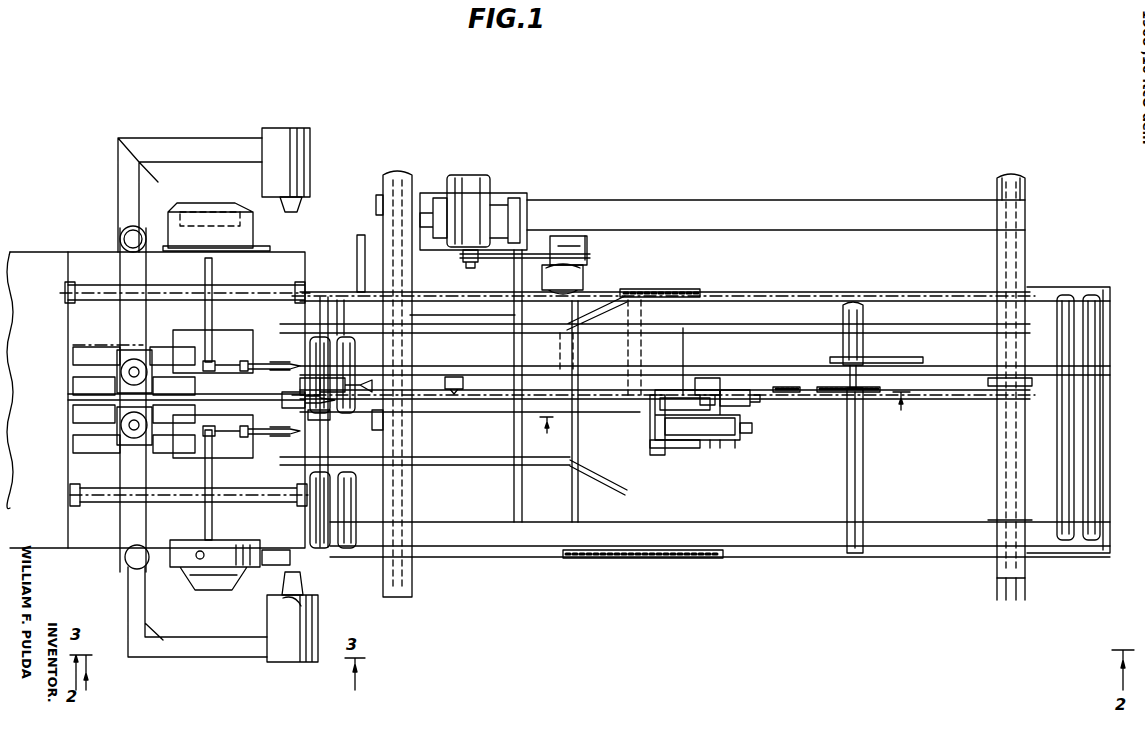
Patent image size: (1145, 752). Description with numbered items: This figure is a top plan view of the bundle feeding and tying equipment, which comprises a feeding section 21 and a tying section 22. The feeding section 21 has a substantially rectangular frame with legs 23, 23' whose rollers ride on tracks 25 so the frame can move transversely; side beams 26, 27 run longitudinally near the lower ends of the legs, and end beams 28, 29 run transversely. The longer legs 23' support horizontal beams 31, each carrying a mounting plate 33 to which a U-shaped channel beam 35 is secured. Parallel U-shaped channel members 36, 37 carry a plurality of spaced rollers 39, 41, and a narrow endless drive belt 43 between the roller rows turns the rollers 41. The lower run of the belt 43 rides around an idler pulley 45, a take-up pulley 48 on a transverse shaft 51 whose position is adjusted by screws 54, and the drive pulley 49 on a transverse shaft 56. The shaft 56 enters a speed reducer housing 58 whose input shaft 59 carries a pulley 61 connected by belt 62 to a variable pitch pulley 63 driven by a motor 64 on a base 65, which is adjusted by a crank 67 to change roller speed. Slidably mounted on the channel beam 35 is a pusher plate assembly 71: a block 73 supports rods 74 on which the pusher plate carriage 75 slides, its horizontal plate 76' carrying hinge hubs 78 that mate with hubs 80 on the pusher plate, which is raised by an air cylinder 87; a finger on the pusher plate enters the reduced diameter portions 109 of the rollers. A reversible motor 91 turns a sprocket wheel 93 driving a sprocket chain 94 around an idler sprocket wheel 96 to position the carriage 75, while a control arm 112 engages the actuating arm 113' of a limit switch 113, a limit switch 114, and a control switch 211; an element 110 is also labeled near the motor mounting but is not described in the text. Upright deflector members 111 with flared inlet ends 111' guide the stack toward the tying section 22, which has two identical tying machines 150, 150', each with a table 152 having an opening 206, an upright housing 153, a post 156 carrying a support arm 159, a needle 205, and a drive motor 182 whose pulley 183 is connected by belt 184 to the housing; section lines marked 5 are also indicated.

The feeding section 21 is at (743, 198).
The tying section 22 is at (202, 135).
The legs 23 is at (988, 545).
The legs 23' is at (1030, 376).
The tracks 25 is at (1020, 175).
The side beam 26 is at (763, 530).
The side beam 27 is at (681, 199).
The end beam 28 is at (995, 460).
The end beam 29 is at (422, 485).
The horizontal beam 31 is at (410, 281).
The mounting plate 33 is at (420, 368).
The U-shaped channel beam 35 is at (953, 395).
The U-shaped channel member 36 is at (870, 560).
The U-shaped channel member 37 is at (964, 287).
The rollers 39 is at (302, 326).
The rollers 41 is at (1098, 405).
The endless drive belt 43 is at (800, 325).
The idler pulley 45 is at (360, 293).
The take-up pulley 48 is at (675, 284).
The pulley 49 is at (626, 345).
The transverse shaft 51 is at (632, 492).
The screw 54 is at (722, 290).
The transverse shaft 56 is at (570, 485).
The speed reducer housing 58 is at (566, 264).
The input shaft 59 is at (562, 250).
The pulley 61 is at (580, 257).
The belt 62 is at (502, 262).
The pulley 63 is at (465, 265).
The motor 64 is at (470, 175).
The base 65 is at (510, 195).
The crank 67 is at (430, 218).
The pusher plate assembly 71 is at (652, 432).
The block 73 is at (751, 394).
The rods 74 is at (448, 415).
The pusher plate carriage 75 is at (685, 380).
The horizontal plate 76' is at (681, 474).
The hinge hubs 78 is at (652, 450).
The hinge hubs 80 is at (655, 420).
The air cylinder 87 is at (745, 432).
The reversible motor 91 is at (836, 355).
The sprocket wheel 93 is at (846, 393).
The sprocket chain 94 is at (503, 379).
The idler sprocket wheel 96 is at (287, 365).
The reduced diameter portions 109 is at (358, 434).
The shelf 110 is at (870, 355).
The upright deflector members 111 is at (655, 400).
The flared inlet end 111' is at (682, 500).
The control arm 112 is at (700, 428).
The limit switch 113 is at (714, 357).
The actuating arm 113' is at (745, 357).
The limit switch 114 is at (333, 395).
The tying machine 150 is at (156, 372).
The tying machine 150' is at (47, 506).
The horizontal table 152 is at (226, 305).
The upright housing 153 is at (202, 208).
The post 156 is at (120, 232).
The support arm 159 is at (140, 302).
The drive motor 182 is at (288, 655).
The pulley 183 is at (282, 555).
The belt 184 is at (316, 604).
The needle 205 is at (214, 435).
The opening 206 is at (262, 440).
The control switch 211 is at (456, 377).
The section line 5 is at (725, 420).